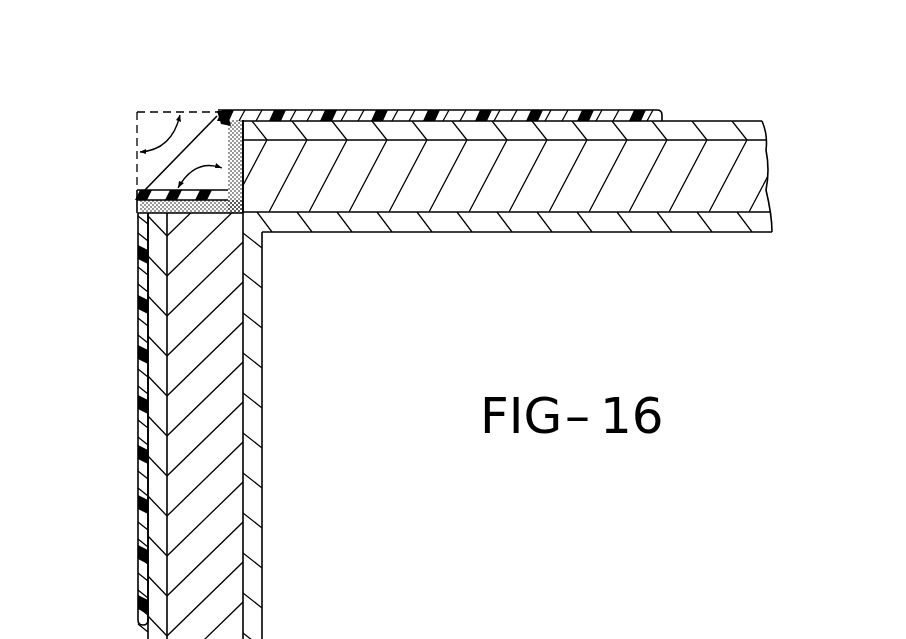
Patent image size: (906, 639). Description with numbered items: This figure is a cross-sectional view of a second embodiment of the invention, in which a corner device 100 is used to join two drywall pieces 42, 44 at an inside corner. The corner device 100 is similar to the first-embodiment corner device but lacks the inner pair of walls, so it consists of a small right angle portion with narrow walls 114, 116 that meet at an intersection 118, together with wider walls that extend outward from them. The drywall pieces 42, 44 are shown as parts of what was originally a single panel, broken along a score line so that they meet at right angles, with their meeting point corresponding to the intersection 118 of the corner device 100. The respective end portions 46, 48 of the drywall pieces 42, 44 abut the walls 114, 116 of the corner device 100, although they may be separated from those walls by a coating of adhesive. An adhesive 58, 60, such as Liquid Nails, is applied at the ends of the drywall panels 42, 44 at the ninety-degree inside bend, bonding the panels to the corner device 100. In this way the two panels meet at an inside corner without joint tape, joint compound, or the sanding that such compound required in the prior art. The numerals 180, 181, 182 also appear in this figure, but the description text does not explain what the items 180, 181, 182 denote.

The drywall piece 42 is at (487, 172).
The drywall piece 44 is at (205, 420).
The end portion 46 is at (243, 192).
The end portion 48 is at (200, 213).
The adhesive 58 is at (237, 130).
The adhesive 60 is at (200, 205).
The corner device 100 is at (136, 380).
The wall 114 is at (222, 122).
The wall 116 is at (175, 191).
The intersection 118 is at (200, 153).
The edge portion 180 is at (500, 634).
The corner region 181 is at (137, 111).
The edge portion 182 is at (692, 634).